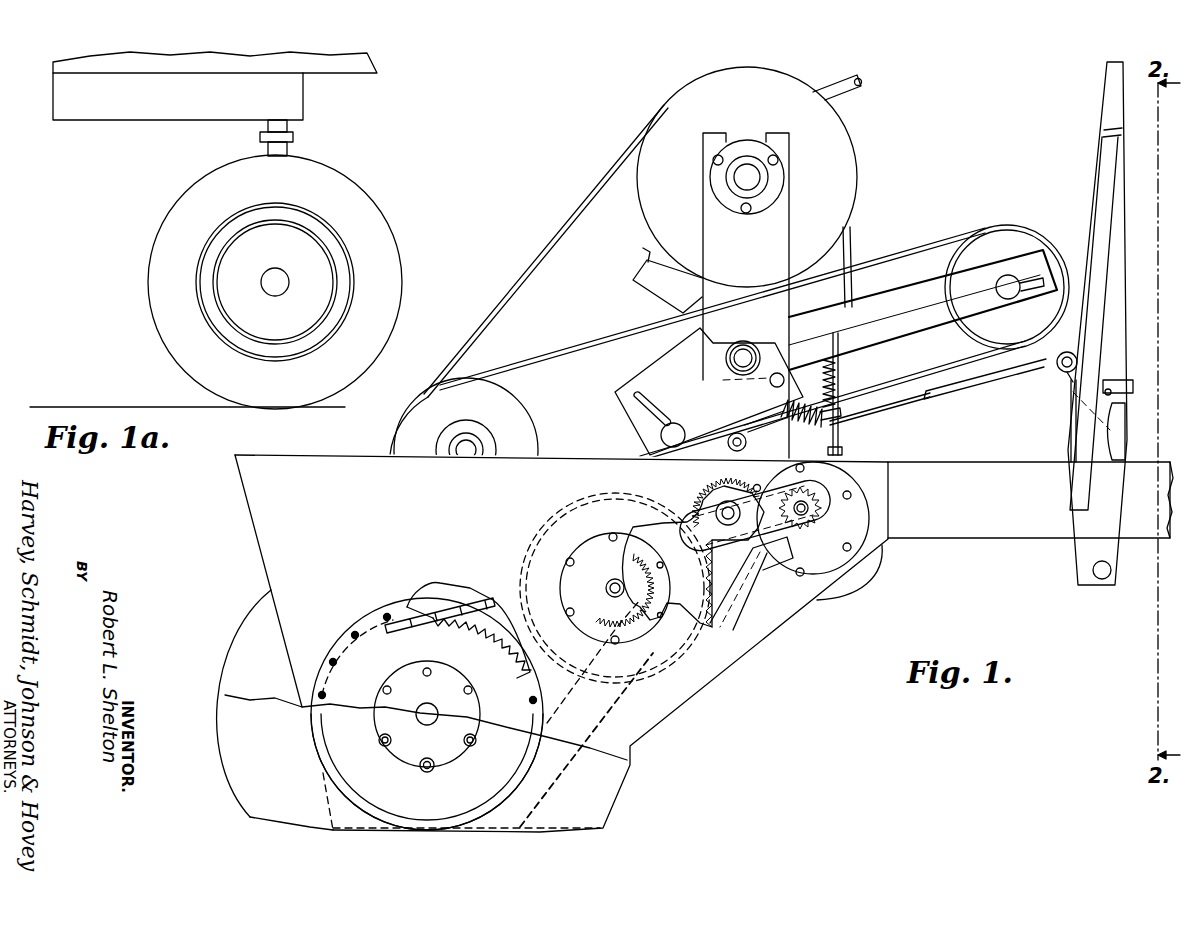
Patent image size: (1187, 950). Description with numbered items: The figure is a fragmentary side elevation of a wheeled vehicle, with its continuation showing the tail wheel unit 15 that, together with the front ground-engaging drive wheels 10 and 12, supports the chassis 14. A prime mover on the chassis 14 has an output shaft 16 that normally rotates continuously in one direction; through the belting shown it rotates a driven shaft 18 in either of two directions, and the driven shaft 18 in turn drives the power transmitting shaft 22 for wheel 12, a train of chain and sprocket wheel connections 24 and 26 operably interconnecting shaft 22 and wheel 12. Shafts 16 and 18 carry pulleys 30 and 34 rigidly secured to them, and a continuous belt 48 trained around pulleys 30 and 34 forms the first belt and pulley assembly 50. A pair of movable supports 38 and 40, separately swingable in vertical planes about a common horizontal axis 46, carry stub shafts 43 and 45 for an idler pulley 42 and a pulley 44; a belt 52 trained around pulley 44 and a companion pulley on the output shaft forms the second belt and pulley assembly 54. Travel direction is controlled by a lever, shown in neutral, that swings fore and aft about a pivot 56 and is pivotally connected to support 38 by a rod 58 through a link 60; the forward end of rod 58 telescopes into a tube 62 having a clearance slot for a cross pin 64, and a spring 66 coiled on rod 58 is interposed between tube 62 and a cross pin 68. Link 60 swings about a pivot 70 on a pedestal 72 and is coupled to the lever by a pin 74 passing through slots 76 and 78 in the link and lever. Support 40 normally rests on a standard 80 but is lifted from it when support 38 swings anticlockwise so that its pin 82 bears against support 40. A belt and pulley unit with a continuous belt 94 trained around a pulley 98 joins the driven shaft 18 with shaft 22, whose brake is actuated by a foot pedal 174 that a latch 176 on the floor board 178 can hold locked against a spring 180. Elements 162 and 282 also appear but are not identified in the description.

In FIG. 1, the drive wheel 10 is at (240, 660).
In FIG. 1, the drive wheel 12 is at (245, 768).
In FIG. 1A, the chassis 14 is at (100, 130).
In FIG. 1, the chassis 14 is at (982, 548).
In FIG. 1A, the tail wheel unit 15 is at (137, 289).
In FIG. 1, the output shaft 16 is at (478, 440).
In FIG. 1, the driven shaft 18 is at (750, 177).
In FIG. 1, the power transmitting shaft 22 is at (815, 505).
In FIG. 1, the chain and sprocket wheel connection 24 is at (459, 596).
In FIG. 1, the chain and sprocket wheel connection 26 is at (750, 616).
In FIG. 1, the pulley 30 is at (492, 398).
In FIG. 1, the pulley 34 is at (842, 186).
In FIG. 1, the movable support 38 is at (648, 380).
In FIG. 1, the movable support 40 is at (1030, 262).
In FIG. 1, the idler pulley 42 is at (618, 458).
In FIG. 1, the stub shaft 43 is at (686, 428).
In FIG. 1, the pulley 44 is at (1050, 307).
In FIG. 1, the stub shaft 45 is at (997, 288).
In FIG. 1, the common horizontal axis 46 is at (743, 340).
In FIG. 1, the continuous belt 48 is at (530, 267).
In FIG. 1, the first belt and pulley assembly 50 is at (588, 197).
In FIG. 1, the belt 52 is at (905, 260).
In FIG. 1, the second belt and pulley assembly 54 is at (956, 236).
In FIG. 1, the pivot 56 is at (1100, 580).
In FIG. 1, the rod 58 is at (948, 388).
In FIG. 1, the link 60 is at (1063, 374).
In FIG. 1, the tube 62 is at (742, 432).
In FIG. 1, the cross pin 64 is at (772, 418).
In FIG. 1, the spring 66 is at (805, 408).
In FIG. 1, the cross pin 68 is at (822, 424).
In FIG. 1, the pivot 70 is at (1071, 440).
In FIG. 1, the pedestal 72 is at (1121, 438).
In FIG. 1, the pin 74 is at (1128, 380).
In FIG. 1, the slot 76 is at (1106, 388).
In FIG. 1, the slot 78 is at (1075, 420).
In FIG. 1, the standard 80 is at (840, 350).
In FIG. 1, the pin 82 is at (782, 374).
In FIG. 1, the continuous belt 94 is at (843, 250).
In FIG. 1, the pulley 98 is at (874, 578).
In FIG. 1, the arm 162 is at (866, 84).
In FIG. 1, the foot pedal 174 is at (915, 332).
In FIG. 1, the latch 176 is at (970, 350).
In FIG. 1, the floor board 178 is at (918, 404).
In FIG. 1, the spring 180 is at (829, 360).
In FIG. 1, the handle 282 is at (1103, 163).